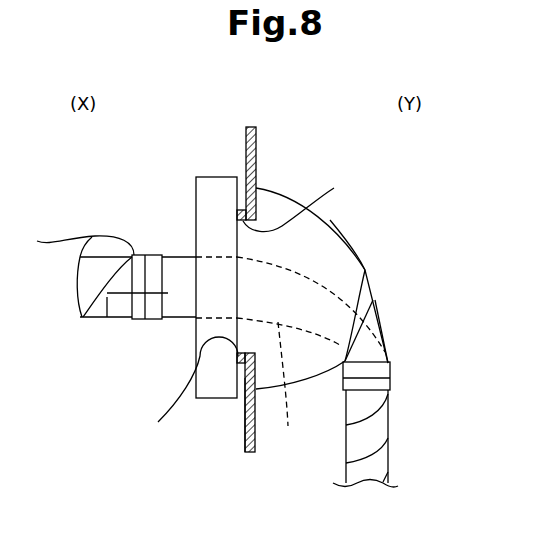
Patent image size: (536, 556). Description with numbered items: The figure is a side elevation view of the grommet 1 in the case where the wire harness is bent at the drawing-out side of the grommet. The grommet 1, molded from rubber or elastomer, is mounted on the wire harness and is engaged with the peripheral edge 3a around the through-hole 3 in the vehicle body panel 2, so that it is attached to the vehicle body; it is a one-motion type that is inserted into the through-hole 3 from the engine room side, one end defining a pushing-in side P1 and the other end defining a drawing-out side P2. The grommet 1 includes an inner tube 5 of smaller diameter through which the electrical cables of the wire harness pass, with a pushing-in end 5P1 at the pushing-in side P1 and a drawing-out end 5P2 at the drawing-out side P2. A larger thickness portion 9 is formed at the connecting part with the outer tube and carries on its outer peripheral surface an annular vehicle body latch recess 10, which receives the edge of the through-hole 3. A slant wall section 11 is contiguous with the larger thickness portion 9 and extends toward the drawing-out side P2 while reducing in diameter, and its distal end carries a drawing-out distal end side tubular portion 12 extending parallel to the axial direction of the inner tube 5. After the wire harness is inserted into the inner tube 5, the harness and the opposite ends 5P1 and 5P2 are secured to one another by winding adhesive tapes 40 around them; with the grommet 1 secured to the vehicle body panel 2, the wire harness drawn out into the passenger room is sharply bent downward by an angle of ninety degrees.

The grommet 1 is at (193, 244).
The vehicle body panel 2 is at (257, 162).
The through-hole 3 is at (190, 390).
The peripheral edge 3a is at (299, 202).
The inner tube 5 is at (284, 386).
The larger thickness portion 9 is at (196, 185).
The vehicle body latch recess 10 is at (242, 380).
The slant wall section 11 is at (350, 242).
The drawing-out distal end side tubular portion 12 is at (370, 281).
The adhesive tape 40 is at (290, 482).
The pushing-in end 5P1 is at (107, 293).
The drawing-out end 5P2 is at (375, 342).
The pushing-in side P1 is at (173, 328).
The drawing-out side P2 is at (399, 353).